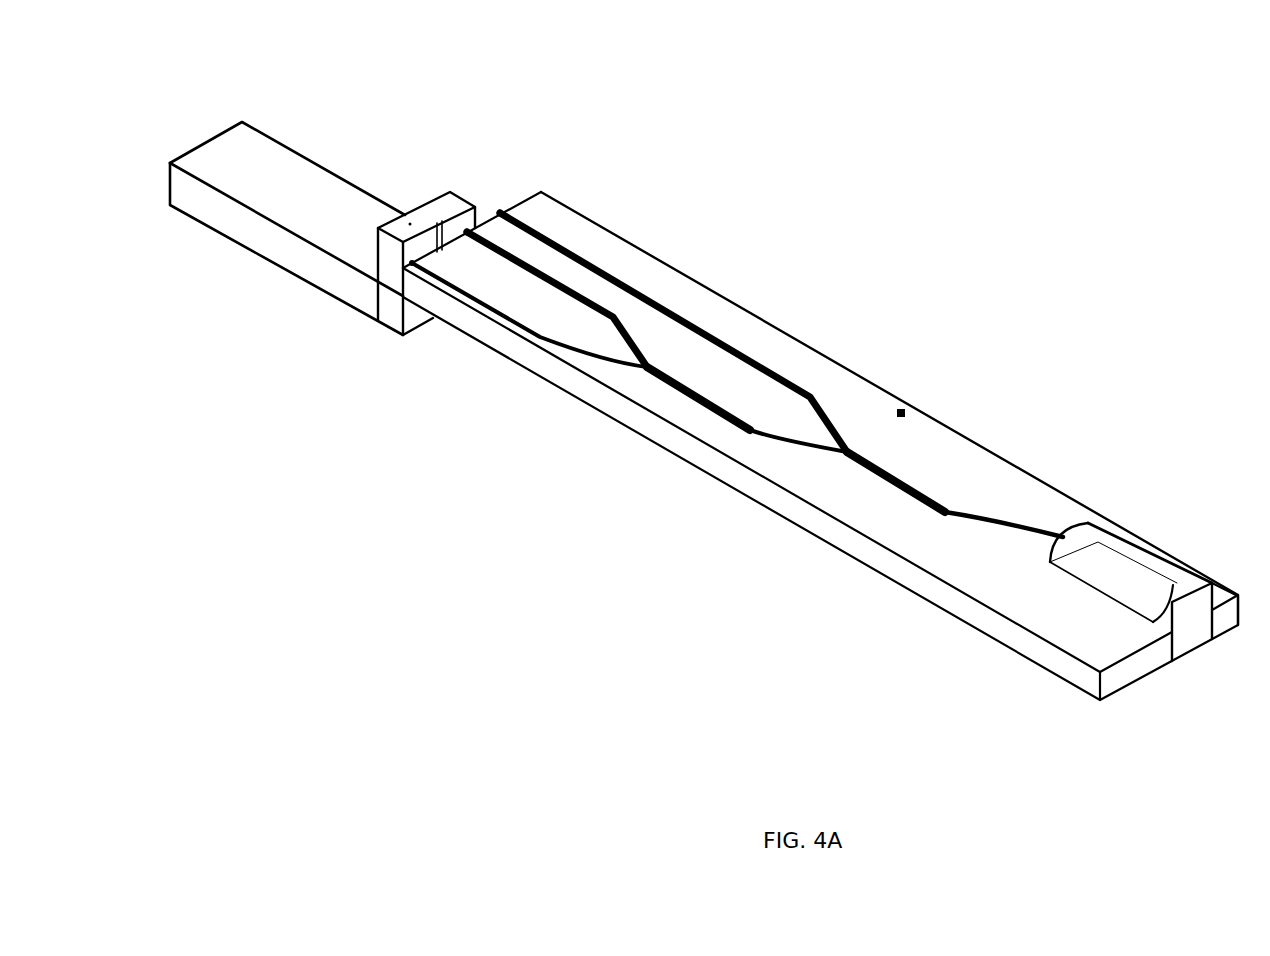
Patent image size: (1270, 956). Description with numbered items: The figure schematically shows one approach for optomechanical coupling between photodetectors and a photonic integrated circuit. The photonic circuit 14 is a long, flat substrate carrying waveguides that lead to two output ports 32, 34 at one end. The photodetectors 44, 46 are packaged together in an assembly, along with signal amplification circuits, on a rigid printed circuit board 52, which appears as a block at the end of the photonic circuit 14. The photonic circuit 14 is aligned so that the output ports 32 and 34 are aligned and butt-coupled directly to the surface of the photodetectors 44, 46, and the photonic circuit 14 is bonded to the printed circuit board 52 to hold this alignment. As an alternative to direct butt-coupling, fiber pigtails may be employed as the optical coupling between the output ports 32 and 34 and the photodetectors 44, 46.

The photonic circuit 14 is at (904, 411).
The output port 32 is at (500, 213).
The output port 34 is at (410, 265).
The photodetector 44 is at (462, 219).
The photodetector 46 is at (410, 224).
The printed circuit board 52 is at (292, 178).